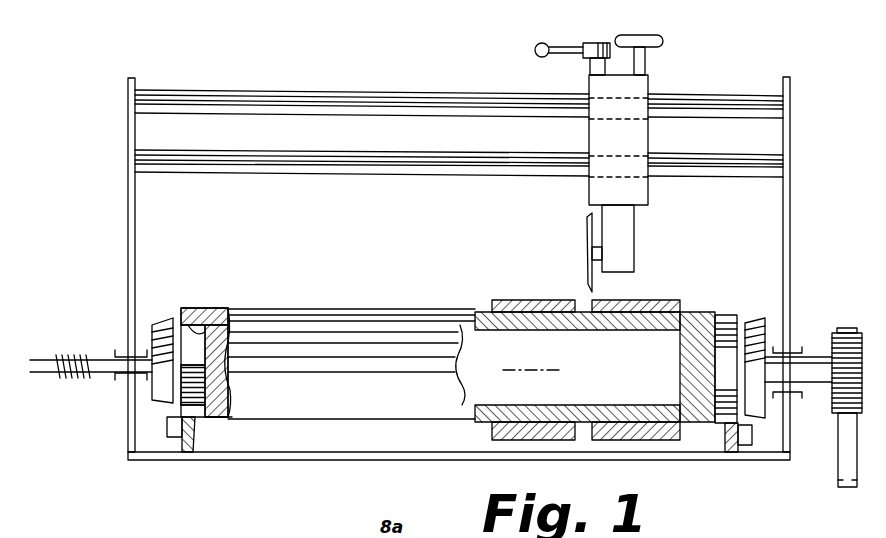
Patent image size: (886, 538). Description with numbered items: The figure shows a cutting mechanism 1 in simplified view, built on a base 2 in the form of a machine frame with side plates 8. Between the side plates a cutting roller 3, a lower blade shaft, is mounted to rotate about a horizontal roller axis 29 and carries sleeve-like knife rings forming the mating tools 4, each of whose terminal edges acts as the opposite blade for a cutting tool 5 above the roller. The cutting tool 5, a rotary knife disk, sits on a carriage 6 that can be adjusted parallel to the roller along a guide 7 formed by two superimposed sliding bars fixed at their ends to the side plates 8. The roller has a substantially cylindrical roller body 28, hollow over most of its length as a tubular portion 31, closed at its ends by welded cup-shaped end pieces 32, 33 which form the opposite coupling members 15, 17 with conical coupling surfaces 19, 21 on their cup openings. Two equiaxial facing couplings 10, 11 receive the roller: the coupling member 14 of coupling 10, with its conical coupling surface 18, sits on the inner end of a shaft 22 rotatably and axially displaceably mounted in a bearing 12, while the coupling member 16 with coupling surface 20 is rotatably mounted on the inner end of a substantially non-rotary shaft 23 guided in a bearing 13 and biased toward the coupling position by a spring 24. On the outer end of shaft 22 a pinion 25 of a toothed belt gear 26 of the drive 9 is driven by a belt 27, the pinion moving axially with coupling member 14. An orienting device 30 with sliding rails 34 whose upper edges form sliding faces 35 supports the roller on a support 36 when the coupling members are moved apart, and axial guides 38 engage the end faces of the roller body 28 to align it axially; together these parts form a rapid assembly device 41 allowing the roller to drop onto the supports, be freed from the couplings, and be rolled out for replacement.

The cutting mechanism 1 is at (249, 40).
The base 2 is at (128, 470).
The cutting roller 3 is at (305, 305).
The mating tools 4 is at (497, 310).
The cutting tool 5 is at (587, 247).
The carriage 6 is at (648, 150).
The guide 7 is at (478, 160).
The side plates 8 is at (135, 226).
The drive 9 is at (797, 493).
The coupling 10 is at (755, 318).
The coupling 11 is at (155, 306).
The bearing 12 is at (800, 398).
The bearing 13 is at (118, 380).
The coupling member 14 is at (768, 350).
The opposite coupling member 15 is at (685, 368).
The coupling member 16 is at (152, 335).
The opposite coupling member 17 is at (207, 372).
The coupling surface 18 is at (748, 332).
The coupling surface 19 is at (676, 316).
The coupling surface 20 is at (196, 325).
The coupling surface 21 is at (215, 342).
The shaft 22 is at (808, 357).
The shaft 23 is at (105, 362).
The spring 24 is at (66, 376).
The pinion 25 is at (845, 415).
The gear 26 is at (863, 326).
The belt 27 is at (843, 490).
The roller body 28 is at (377, 322).
The roller axis 29 is at (525, 370).
The orienting device 30 is at (210, 437).
The tubular portion 31 is at (546, 312).
The end piece 32 is at (690, 378).
The end piece 33 is at (215, 418).
The sliding rails 34 is at (734, 450).
The sliding faces 35 is at (728, 428).
The support 36 is at (187, 448).
The axial guides 38 is at (746, 446).
The rapid assembly device 41 is at (150, 428).